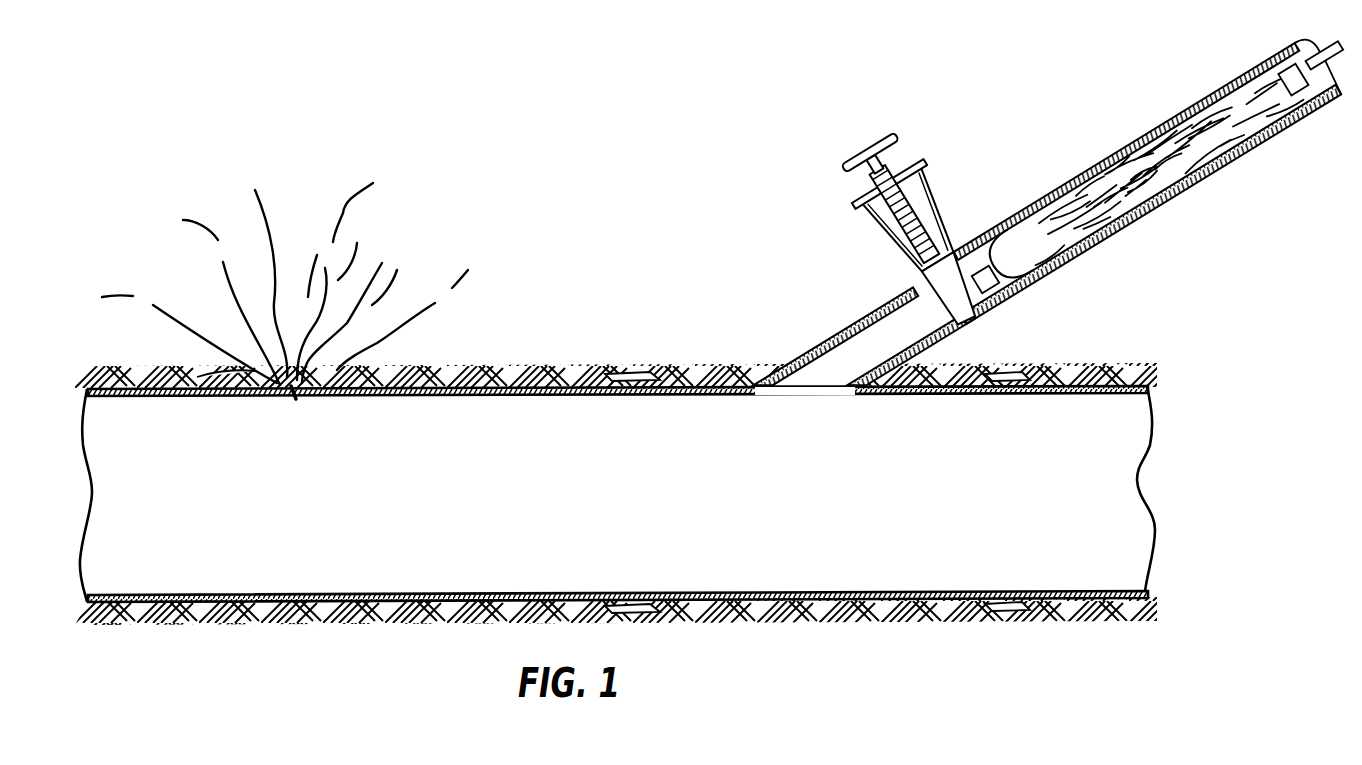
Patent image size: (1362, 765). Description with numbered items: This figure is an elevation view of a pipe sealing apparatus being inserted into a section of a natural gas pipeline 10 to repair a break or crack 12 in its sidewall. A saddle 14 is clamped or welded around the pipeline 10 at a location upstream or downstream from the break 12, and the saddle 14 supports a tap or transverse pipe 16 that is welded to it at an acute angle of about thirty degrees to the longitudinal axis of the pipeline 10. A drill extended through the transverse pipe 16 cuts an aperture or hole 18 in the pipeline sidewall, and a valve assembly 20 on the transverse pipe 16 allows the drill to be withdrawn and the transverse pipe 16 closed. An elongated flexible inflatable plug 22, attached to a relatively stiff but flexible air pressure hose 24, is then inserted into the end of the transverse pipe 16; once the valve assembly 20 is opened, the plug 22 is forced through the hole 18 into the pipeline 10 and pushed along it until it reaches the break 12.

The natural gas pipeline 10 is at (553, 378).
The break or crack 12 is at (292, 398).
The saddle 14 is at (685, 360).
The transverse pipe 16 is at (842, 322).
The aperture or hole 18 is at (770, 393).
The valve assembly 20 is at (942, 196).
The inflatable plug 22 is at (1066, 262).
The hose 24 is at (1326, 97).